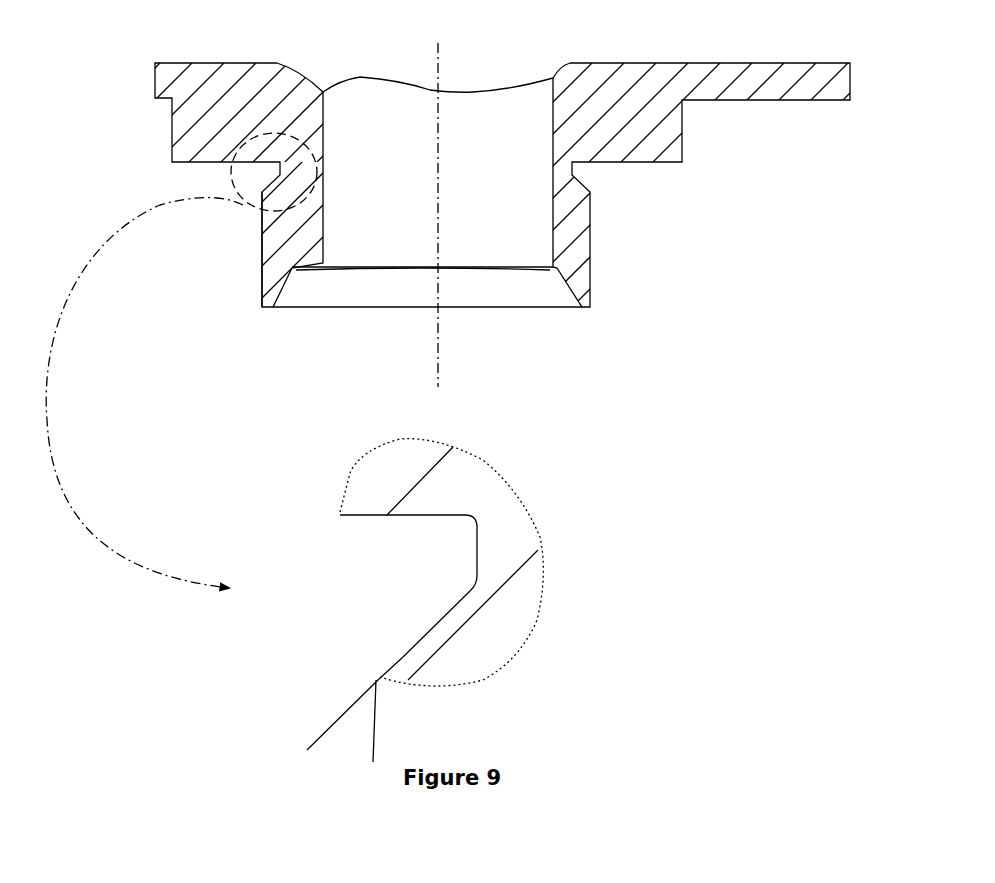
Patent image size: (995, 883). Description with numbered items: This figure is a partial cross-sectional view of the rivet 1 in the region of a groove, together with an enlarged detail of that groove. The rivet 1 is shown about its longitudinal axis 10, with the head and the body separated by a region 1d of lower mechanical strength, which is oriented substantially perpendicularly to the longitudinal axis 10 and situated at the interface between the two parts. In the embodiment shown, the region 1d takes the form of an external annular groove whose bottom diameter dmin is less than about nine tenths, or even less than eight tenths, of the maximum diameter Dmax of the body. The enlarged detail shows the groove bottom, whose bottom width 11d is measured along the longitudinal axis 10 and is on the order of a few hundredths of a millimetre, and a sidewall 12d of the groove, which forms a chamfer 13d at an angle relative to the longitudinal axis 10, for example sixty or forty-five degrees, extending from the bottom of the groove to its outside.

The rivet 1 is at (640, 76).
The longitudinal axis 10 is at (434, 341).
The maximum diameter Dmax is at (272, 248).
The region of lower mechanical strength 1d is at (333, 517).
The bottom width 11d is at (481, 515).
The sidewall 12d is at (403, 657).
The chamfer 13d is at (435, 622).
The bottom diameter dmin is at (478, 551).